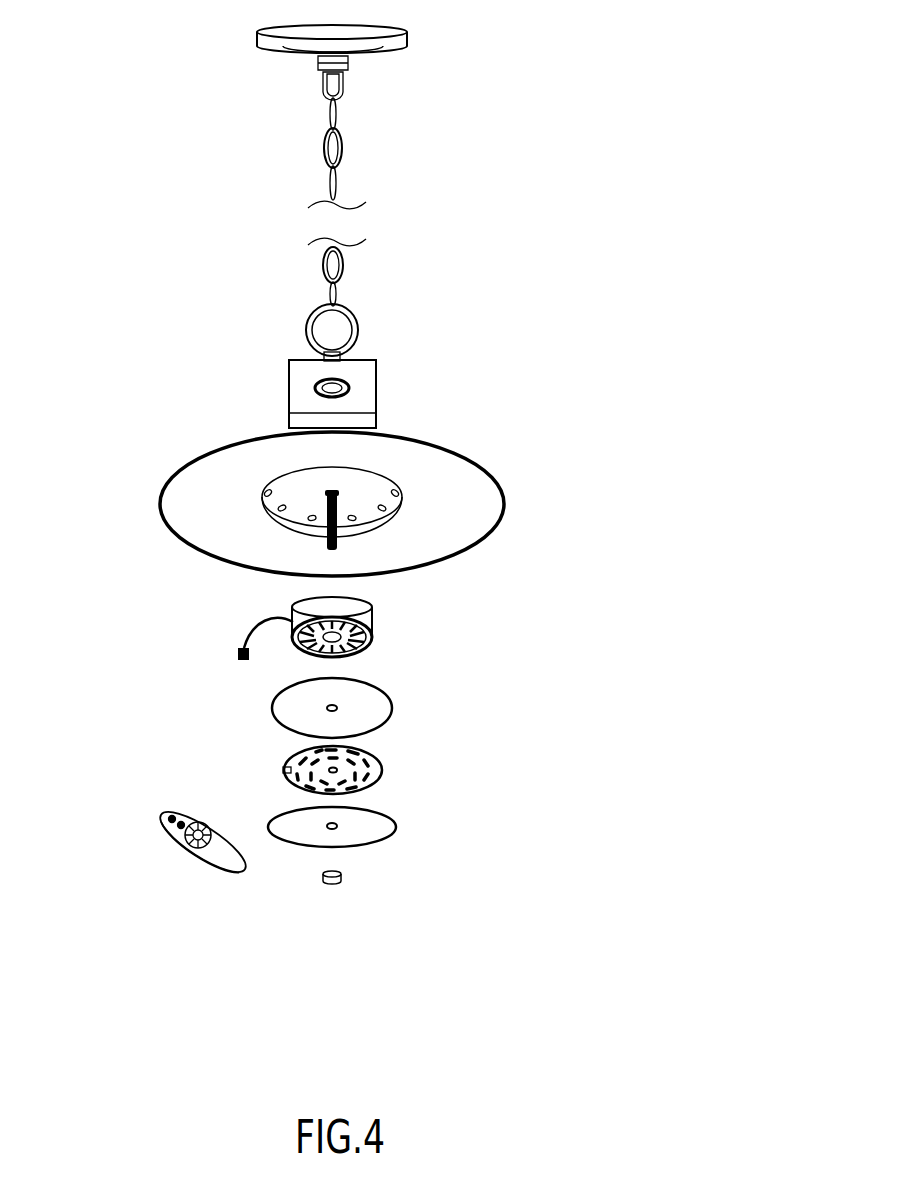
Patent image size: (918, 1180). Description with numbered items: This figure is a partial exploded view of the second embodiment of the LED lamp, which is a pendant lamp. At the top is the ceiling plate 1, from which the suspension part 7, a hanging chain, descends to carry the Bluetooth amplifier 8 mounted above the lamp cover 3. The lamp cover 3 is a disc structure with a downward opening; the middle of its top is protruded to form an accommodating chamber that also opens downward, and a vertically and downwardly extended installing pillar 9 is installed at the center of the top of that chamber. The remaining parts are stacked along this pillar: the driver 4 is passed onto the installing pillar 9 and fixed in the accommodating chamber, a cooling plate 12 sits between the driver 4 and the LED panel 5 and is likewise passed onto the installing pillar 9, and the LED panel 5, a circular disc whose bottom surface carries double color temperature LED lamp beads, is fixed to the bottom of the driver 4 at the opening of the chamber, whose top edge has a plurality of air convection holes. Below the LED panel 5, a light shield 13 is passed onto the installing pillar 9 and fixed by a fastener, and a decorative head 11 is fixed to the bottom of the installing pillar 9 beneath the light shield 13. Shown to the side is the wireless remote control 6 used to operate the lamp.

The ceiling plate 1 is at (440, 38).
The suspension part 7 is at (380, 148).
The Bluetooth amplifier 8 is at (400, 380).
The lamp cover 3 is at (510, 507).
The installing pillar 9 is at (380, 550).
The driver 4 is at (420, 620).
The cooling plate 12 is at (440, 710).
The LED panel 5 is at (440, 775).
The light shield 13 is at (440, 827).
The decorative head 11 is at (400, 875).
The wireless remote control 6 is at (173, 845).